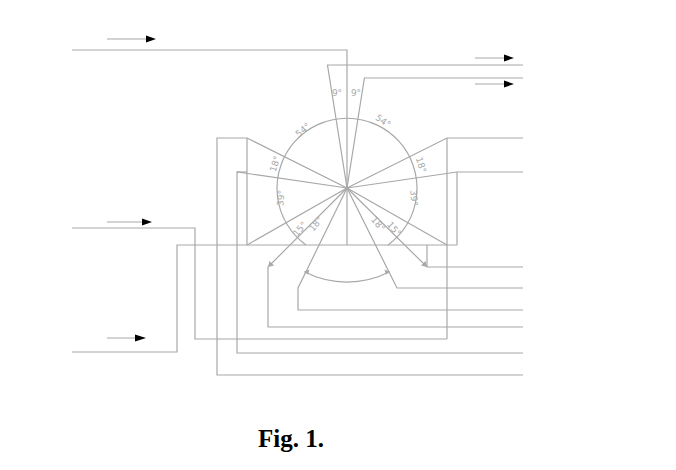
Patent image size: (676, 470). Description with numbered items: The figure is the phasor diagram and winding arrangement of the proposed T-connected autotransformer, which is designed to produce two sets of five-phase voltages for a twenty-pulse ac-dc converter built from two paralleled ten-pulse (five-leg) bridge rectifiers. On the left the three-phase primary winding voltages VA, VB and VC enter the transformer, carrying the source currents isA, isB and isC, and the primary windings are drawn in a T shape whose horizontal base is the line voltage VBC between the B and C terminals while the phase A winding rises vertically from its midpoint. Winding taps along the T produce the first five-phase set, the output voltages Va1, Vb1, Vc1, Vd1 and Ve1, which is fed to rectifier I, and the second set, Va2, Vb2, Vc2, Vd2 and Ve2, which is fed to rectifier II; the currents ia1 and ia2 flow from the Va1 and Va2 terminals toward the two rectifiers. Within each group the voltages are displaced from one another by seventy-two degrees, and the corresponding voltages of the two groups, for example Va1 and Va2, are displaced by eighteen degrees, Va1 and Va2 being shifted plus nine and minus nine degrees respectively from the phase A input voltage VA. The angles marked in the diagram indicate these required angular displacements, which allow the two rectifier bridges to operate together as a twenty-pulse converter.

The phase A primary winding voltage VA is at (211, 138).
The phase B primary winding voltage VB is at (259, 277).
The phase C primary winding voltage VC is at (249, 303).
The line voltage between phases B and C VBC is at (347, 201).
The phase A input current isA is at (131, 28).
The phase B input current isB is at (129, 210).
The phase C input current isC is at (125, 327).
The first-set phase a output voltage Va1 is at (440, 116).
The second-set phase a output voltage Va2 is at (450, 127).
The first-set phase a output current ia1 is at (494, 47).
The second-set phase a output current ia2 is at (494, 97).
The first-set phase b output voltage Vb1 is at (451, 231).
The second-set phase b output voltage Vb2 is at (451, 202).
The first-set phase c output voltage Vc1 is at (450, 232).
The second-set phase c output voltage Vc2 is at (450, 243).
The first-set phase d output voltage Vd1 is at (426, 254).
The second-set phase d output voltage Vd2 is at (411, 265).
The first-set phase e output voltage Ve1 is at (397, 268).
The second-set phase e output voltage Ve2 is at (387, 262).